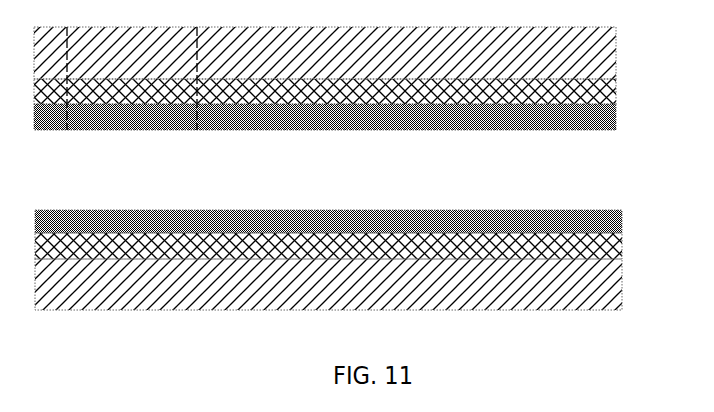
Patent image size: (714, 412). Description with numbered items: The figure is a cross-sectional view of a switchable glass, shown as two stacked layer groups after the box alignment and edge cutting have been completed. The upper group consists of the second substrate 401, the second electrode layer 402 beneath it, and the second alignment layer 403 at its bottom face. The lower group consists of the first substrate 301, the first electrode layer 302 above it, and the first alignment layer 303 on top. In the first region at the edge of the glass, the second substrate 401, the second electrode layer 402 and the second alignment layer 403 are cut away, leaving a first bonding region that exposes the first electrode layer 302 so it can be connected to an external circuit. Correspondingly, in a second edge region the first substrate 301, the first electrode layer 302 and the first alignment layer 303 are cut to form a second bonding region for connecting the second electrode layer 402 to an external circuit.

The second substrate 401 is at (616, 52).
The second electrode layer 402 is at (616, 90).
The second alignment layer 403 is at (616, 115).
The first substrate 301 is at (622, 280).
The first electrode layer 302 is at (622, 243).
The first alignment layer 303 is at (622, 218).